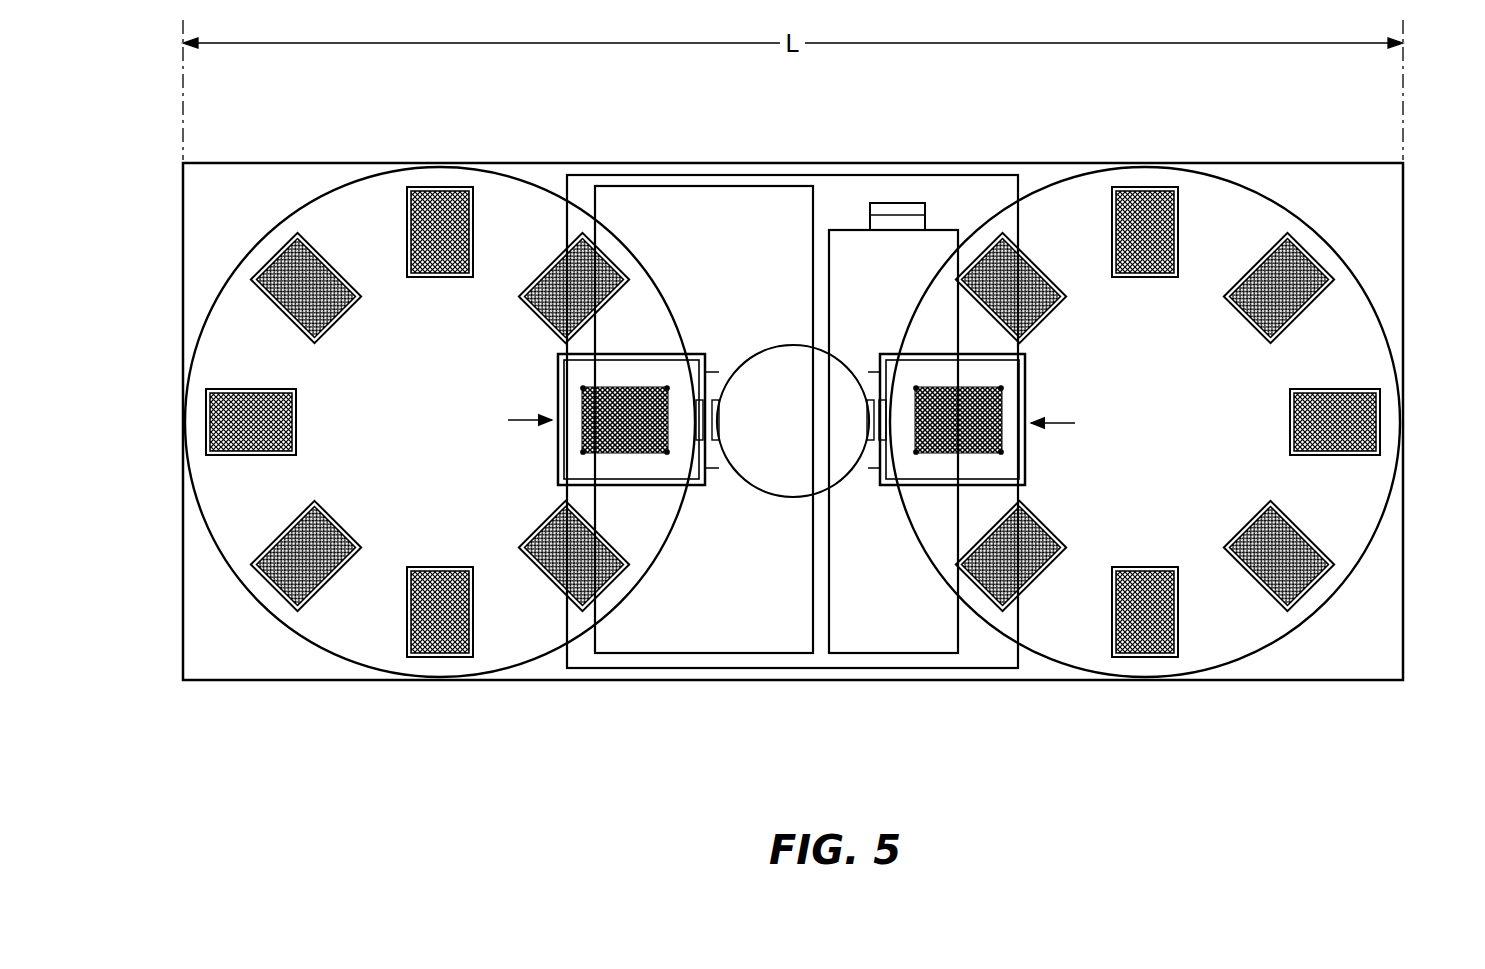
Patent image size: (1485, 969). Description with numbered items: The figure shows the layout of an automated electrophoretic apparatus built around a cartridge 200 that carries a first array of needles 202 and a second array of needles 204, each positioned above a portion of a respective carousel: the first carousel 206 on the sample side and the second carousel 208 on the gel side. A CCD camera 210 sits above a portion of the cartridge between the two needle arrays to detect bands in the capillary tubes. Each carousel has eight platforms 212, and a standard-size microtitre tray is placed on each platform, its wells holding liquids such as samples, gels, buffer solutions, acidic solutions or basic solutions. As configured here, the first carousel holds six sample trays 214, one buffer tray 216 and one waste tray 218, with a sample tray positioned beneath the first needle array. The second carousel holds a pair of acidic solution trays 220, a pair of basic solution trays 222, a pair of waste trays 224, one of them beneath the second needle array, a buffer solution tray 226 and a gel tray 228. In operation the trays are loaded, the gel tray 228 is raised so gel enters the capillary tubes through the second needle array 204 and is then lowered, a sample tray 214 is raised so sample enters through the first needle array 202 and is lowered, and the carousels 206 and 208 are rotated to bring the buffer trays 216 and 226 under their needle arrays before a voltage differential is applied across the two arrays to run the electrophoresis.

The cartridge 200 is at (725, 358).
The first array of needles 202 is at (576, 375).
The second array of needles 204 is at (1013, 378).
The first carousel 206 is at (334, 205).
The second carousel 208 is at (1265, 195).
The CCD camera 210 is at (777, 463).
The platforms 212 is at (403, 653).
The sample trays 214 is at (208, 423).
The buffer tray 216 is at (602, 580).
The waste vial 218 is at (443, 645).
The acidic solution trays 220 is at (1378, 422).
The basic solution trays 222 is at (1305, 262).
The waste trays 224 is at (982, 262).
The buffer solution tray 226 is at (1143, 187).
The gel tray 228 is at (1303, 580).